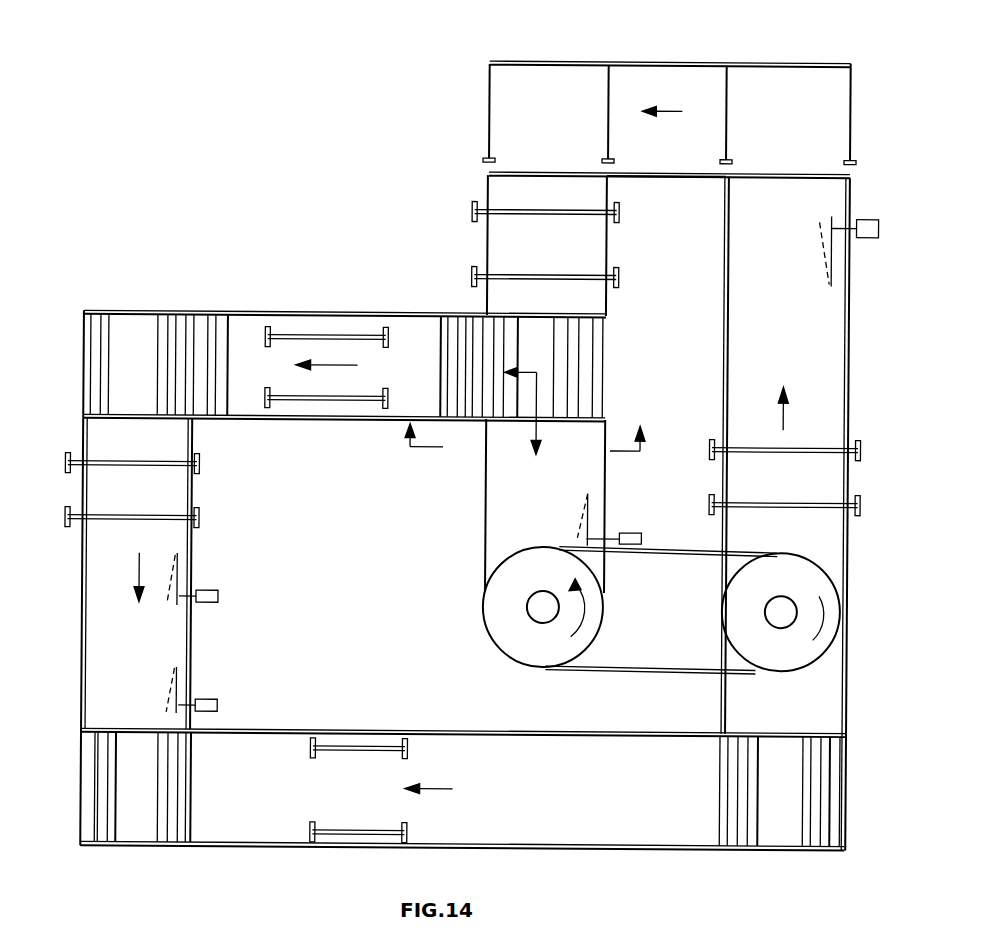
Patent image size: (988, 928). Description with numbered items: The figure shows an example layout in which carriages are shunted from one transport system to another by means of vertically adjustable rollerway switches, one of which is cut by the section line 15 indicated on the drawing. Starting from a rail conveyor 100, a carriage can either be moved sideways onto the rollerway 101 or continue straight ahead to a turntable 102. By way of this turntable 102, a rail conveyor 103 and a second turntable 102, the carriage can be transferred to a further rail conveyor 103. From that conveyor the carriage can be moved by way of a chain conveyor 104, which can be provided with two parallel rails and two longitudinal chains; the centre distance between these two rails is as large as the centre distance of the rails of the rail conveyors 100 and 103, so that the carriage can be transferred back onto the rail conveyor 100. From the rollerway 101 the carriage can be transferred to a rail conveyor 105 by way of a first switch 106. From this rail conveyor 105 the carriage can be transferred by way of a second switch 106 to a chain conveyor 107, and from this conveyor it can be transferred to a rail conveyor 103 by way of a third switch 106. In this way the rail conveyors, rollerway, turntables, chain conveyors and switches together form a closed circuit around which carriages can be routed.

The section 15- 15 is at (521, 447).
The rail conveyor 100 is at (588, 253).
The rollerway 101 is at (316, 313).
The turntable 102 is at (507, 595).
The rail conveyor 103 is at (850, 336).
The chain conveyor 104 is at (686, 160).
The rail conveyor 105 is at (193, 572).
The switch 106 is at (133, 338).
The chain conveyor 107 is at (631, 61).